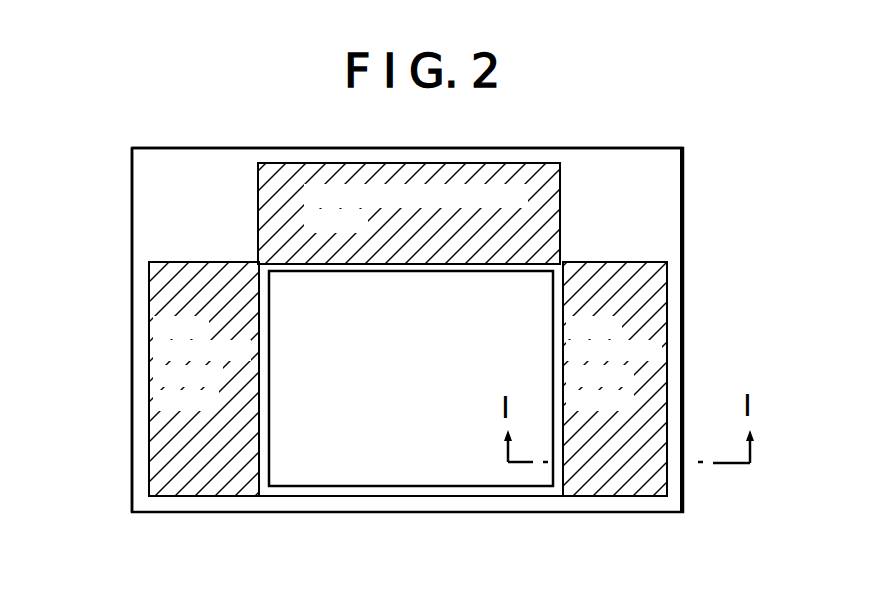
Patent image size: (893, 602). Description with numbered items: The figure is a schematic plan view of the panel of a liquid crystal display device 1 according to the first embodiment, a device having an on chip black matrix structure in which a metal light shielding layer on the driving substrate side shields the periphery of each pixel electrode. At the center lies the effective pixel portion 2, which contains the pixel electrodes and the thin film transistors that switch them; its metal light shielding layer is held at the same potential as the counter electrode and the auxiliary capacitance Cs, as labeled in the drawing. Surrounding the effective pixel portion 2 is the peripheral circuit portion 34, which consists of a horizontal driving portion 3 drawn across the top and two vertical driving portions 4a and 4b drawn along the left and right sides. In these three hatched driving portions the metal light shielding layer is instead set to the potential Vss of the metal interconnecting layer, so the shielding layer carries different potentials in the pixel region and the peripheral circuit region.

The liquid crystal display device 1 is at (265, 107).
The effective pixel portion 2 is at (337, 478).
The horizontal driving portion 3 is at (541, 177).
The vertical driving portion 4a is at (160, 298).
The vertical driving portion 4b is at (667, 297).
The peripheral circuit portion 34 is at (113, 197).